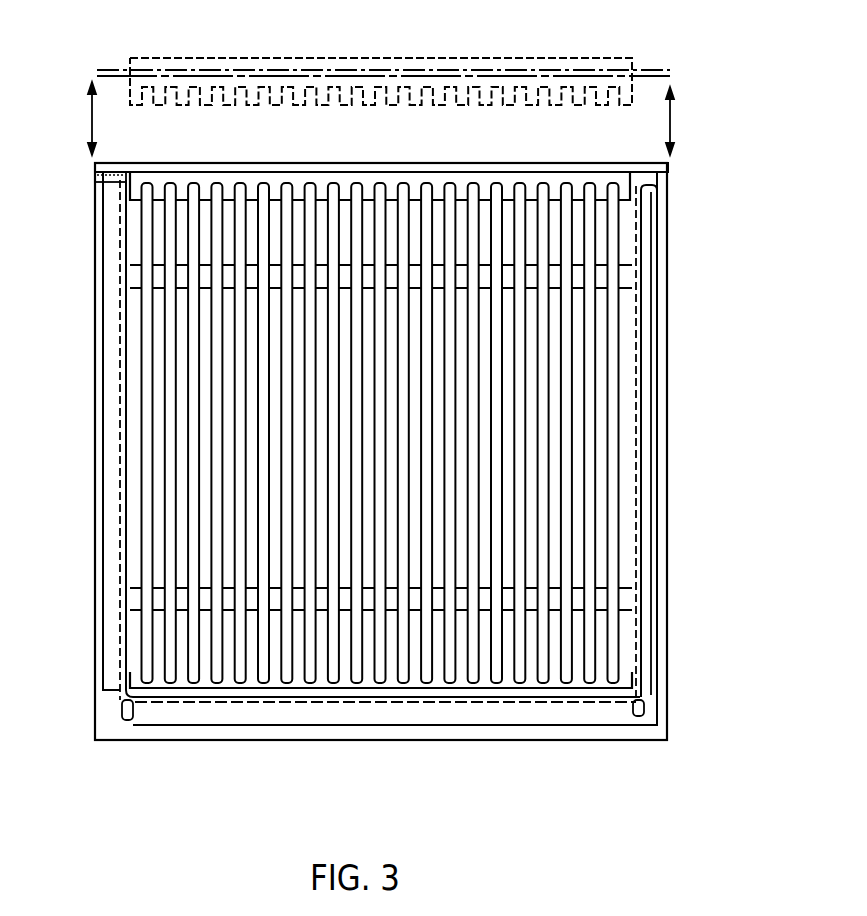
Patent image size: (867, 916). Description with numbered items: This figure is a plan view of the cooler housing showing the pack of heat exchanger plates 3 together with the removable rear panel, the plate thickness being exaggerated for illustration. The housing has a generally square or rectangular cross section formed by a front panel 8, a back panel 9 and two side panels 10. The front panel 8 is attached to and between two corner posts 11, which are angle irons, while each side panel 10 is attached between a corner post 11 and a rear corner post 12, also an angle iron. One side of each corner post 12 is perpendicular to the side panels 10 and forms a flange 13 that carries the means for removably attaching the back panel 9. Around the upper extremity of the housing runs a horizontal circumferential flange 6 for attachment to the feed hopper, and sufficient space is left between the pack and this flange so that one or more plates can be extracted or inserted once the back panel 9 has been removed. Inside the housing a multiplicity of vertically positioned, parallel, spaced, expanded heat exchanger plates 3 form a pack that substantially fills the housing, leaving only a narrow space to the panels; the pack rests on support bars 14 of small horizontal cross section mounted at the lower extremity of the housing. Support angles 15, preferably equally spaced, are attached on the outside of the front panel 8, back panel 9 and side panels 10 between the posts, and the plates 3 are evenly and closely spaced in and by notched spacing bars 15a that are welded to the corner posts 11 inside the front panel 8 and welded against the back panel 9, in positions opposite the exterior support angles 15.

The heat exchanger plates 3 is at (145, 552).
The horizontal circumferential flange 6 is at (665, 392).
The front panel 8 is at (382, 702).
The back panel 9 is at (640, 163).
The side panels 10 is at (120, 500).
The corner posts 11 is at (132, 703).
The corner post 12 is at (120, 190).
The flange 13 is at (100, 178).
The support bars 14 is at (620, 612).
The support angles 15 is at (477, 58).
The notched spacing bars 15a is at (562, 192).